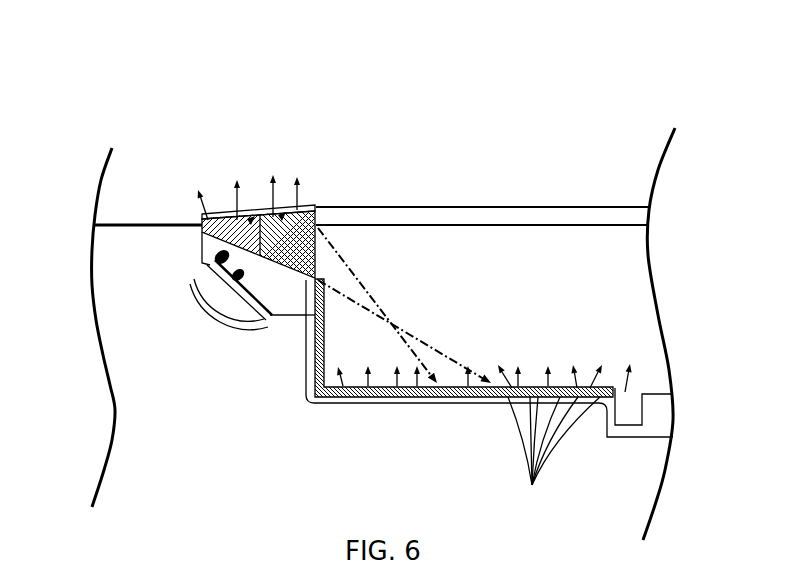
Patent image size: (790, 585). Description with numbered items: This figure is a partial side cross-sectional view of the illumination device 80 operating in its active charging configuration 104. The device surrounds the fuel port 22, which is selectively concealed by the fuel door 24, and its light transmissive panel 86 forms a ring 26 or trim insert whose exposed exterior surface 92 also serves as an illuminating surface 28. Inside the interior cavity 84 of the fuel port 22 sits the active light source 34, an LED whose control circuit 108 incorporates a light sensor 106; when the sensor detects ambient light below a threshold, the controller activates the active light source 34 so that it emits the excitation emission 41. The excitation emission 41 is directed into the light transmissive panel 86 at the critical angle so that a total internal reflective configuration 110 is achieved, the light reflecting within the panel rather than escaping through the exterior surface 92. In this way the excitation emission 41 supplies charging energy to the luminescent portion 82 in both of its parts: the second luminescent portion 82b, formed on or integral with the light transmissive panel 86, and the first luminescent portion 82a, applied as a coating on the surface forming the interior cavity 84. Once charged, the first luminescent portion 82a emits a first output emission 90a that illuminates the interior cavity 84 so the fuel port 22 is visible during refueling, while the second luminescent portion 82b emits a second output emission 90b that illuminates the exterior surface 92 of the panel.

The illumination device 80 is at (597, 65).
The active charging configuration 104 is at (546, 80).
The fuel door 24 is at (577, 215).
The light transmissive panel 86 is at (482, 202).
The total internal reflective configuration 110 is at (317, 226).
The fuel port 22 is at (669, 325).
The interior cavity 84 is at (607, 288).
The luminescent portion 82 is at (462, 274).
The second luminescent portion 82b is at (303, 207).
The first luminescent portion 82a is at (453, 382).
The ring 26 is at (258, 194).
The illuminating surface 28 is at (283, 207).
The exterior surface 92 is at (254, 204).
The second output emission 90b is at (237, 198).
The first output emission 90a is at (484, 436).
The excitation emission 41 is at (345, 297).
The control circuit 108 is at (203, 261).
The active light source 34 is at (207, 267).
The light sensor 106 is at (285, 316).